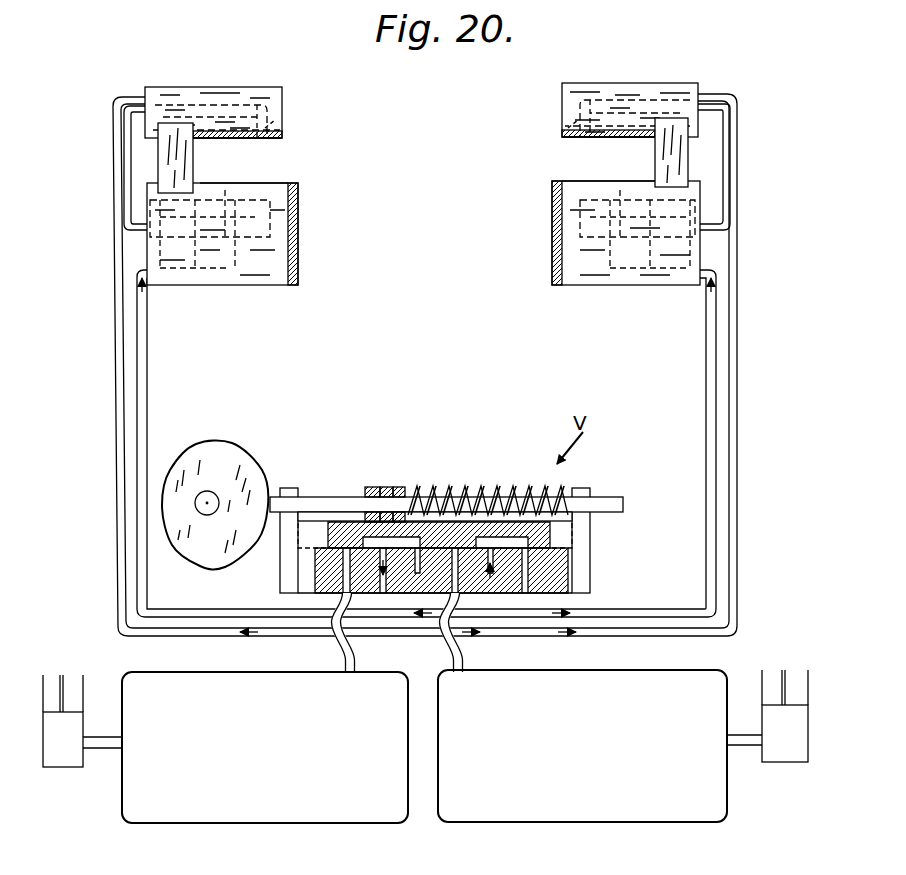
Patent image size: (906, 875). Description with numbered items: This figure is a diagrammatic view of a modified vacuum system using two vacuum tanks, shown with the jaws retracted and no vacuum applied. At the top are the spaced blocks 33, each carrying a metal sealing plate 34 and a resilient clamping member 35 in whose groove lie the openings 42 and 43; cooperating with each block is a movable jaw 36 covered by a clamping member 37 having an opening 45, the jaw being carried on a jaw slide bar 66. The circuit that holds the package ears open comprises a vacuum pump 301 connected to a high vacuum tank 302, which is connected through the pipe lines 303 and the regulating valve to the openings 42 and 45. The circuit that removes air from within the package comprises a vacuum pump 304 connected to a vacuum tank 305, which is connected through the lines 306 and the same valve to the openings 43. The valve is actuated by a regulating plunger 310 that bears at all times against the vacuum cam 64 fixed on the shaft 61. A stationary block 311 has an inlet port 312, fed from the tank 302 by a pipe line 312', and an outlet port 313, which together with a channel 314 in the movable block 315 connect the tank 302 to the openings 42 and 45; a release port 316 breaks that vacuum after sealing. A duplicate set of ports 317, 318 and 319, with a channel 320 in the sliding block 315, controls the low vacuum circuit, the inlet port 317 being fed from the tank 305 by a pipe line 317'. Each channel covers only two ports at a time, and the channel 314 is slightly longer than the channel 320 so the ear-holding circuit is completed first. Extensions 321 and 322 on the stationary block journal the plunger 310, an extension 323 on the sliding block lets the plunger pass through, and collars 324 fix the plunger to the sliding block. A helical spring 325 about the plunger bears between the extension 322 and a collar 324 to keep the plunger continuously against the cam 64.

The block 33 is at (430, 259).
The sealing plate 34 is at (300, 240).
The clamping member 35 is at (214, 185).
The movable jaw 36 is at (225, 93).
The clamping member 37 is at (204, 138).
The opening 42 is at (270, 182).
The opening 43 is at (223, 200).
The opening 45 is at (283, 113).
The shaft 61 is at (207, 514).
The vacuum cam 64 is at (233, 463).
The jaw slide bar 66 is at (165, 162).
The vacuum pump 301 is at (69, 765).
The high vacuum tank 302 is at (357, 823).
The pipe line 303 is at (113, 437).
The vacuum pump 304 is at (790, 765).
The vacuum tank 305 is at (556, 823).
The line 306 is at (143, 370).
The regulating plunger 310 is at (322, 502).
The stationary block 311 is at (582, 582).
The inlet port 312 is at (324, 604).
The pipe line 312' is at (368, 632).
The outlet port 313 is at (384, 596).
The channel 314 is at (418, 594).
The movable block 315 is at (547, 530).
The release port 316 is at (376, 543).
The inlet port 317 is at (468, 604).
The pipe line 317' is at (479, 632).
The outlet port 318 is at (491, 596).
The release port 319 is at (527, 596).
The channel 320 is at (492, 543).
The extension 321 is at (290, 488).
The extension 322 is at (582, 488).
The extension 323 is at (388, 488).
The collar 324 is at (367, 488).
The helical spring 325 is at (455, 486).